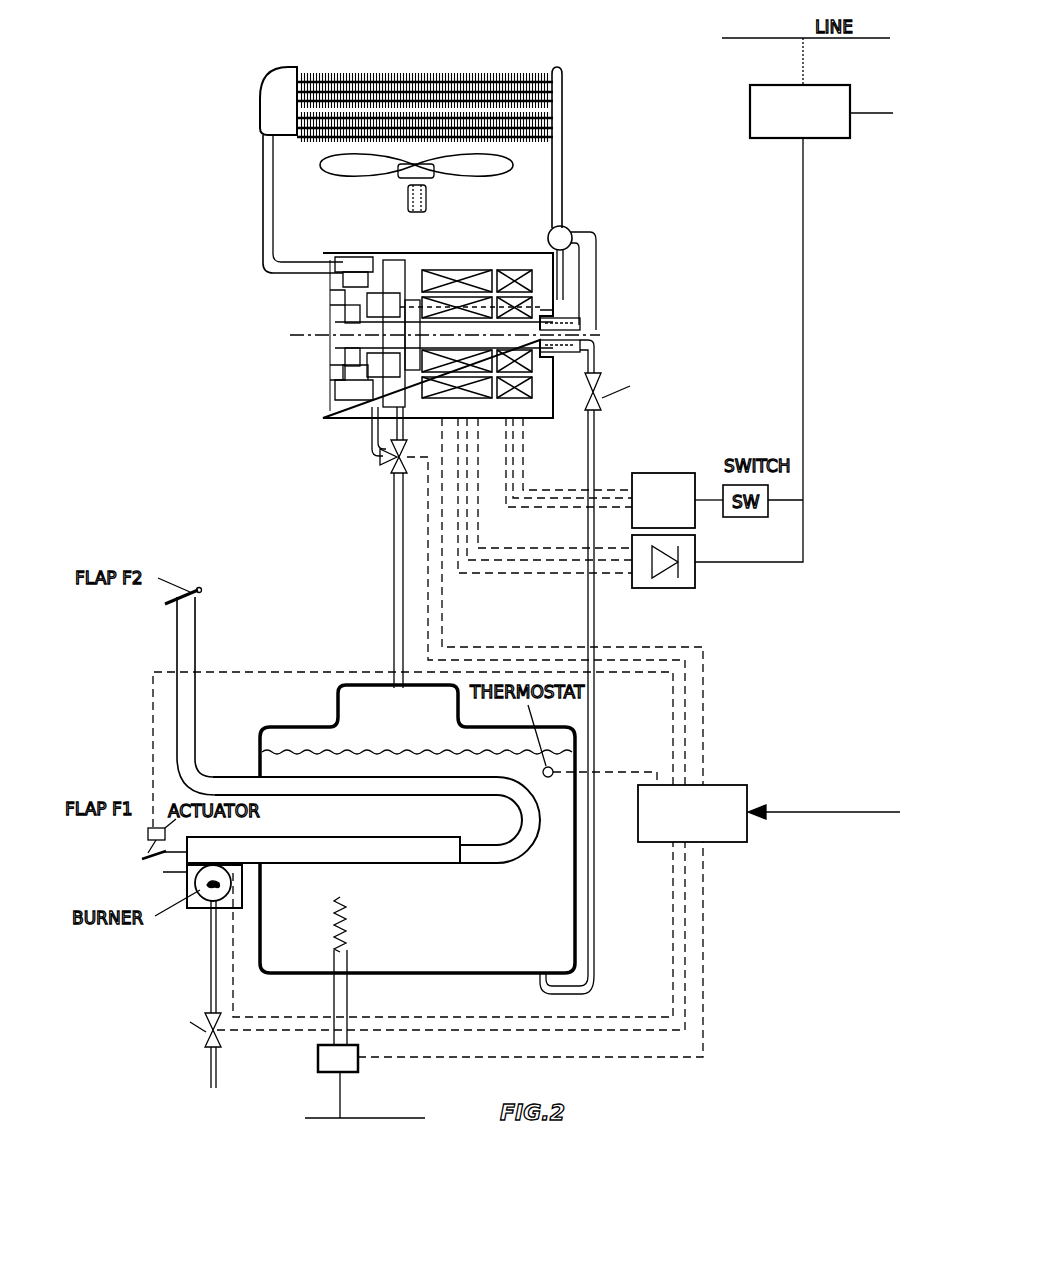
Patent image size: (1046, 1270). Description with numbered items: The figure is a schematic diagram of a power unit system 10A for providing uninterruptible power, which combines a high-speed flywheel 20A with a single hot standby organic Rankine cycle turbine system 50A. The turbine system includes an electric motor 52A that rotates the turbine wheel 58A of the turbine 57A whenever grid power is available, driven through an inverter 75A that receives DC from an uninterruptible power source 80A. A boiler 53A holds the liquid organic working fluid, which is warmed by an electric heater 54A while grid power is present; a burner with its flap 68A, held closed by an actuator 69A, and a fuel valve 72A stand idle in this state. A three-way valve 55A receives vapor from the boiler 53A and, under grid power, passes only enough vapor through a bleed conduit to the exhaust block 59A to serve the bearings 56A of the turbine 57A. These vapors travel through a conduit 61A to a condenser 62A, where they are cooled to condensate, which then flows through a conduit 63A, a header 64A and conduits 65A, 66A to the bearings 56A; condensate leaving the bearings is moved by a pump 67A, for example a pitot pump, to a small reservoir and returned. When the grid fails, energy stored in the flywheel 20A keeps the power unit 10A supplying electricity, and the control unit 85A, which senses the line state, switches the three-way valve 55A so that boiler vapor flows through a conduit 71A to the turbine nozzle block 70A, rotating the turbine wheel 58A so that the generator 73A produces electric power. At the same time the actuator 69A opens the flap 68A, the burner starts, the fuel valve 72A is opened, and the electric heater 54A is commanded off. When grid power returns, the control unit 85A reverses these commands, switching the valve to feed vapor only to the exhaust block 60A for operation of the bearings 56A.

The power unit system 10A is at (255, 86).
The hot standby organic Rankine cycle turbine system 50A is at (366, 50).
The condenser 62A is at (447, 76).
The conduit 63A is at (570, 177).
The conduit 61A is at (276, 180).
The turbine nozzle block 70A is at (365, 259).
The exhaust block 60A is at (345, 267).
The turbine 57A is at (323, 299).
The bearings 56A is at (357, 346).
The high-speed flywheel 20A is at (355, 360).
The turbine wheel 58A is at (345, 384).
The exhaust block 59A is at (378, 428).
The conduit 71A is at (400, 429).
The three-way valve 55A is at (398, 462).
The generator 73A is at (470, 272).
The header 64A is at (566, 227).
The electric motor 52A is at (528, 282).
The conduit 65A is at (560, 288).
The conduit 66A is at (550, 310).
The pump 67A is at (588, 344).
The uninterruptible power source 80A is at (784, 85).
The inverter 75A is at (678, 473).
The control unit 85A is at (716, 785).
The boiler 53A is at (594, 913).
The electric heater 54A is at (344, 897).
The actuator 69A is at (200, 836).
The flap 68A is at (140, 856).
The fuel valve 72A is at (218, 1042).